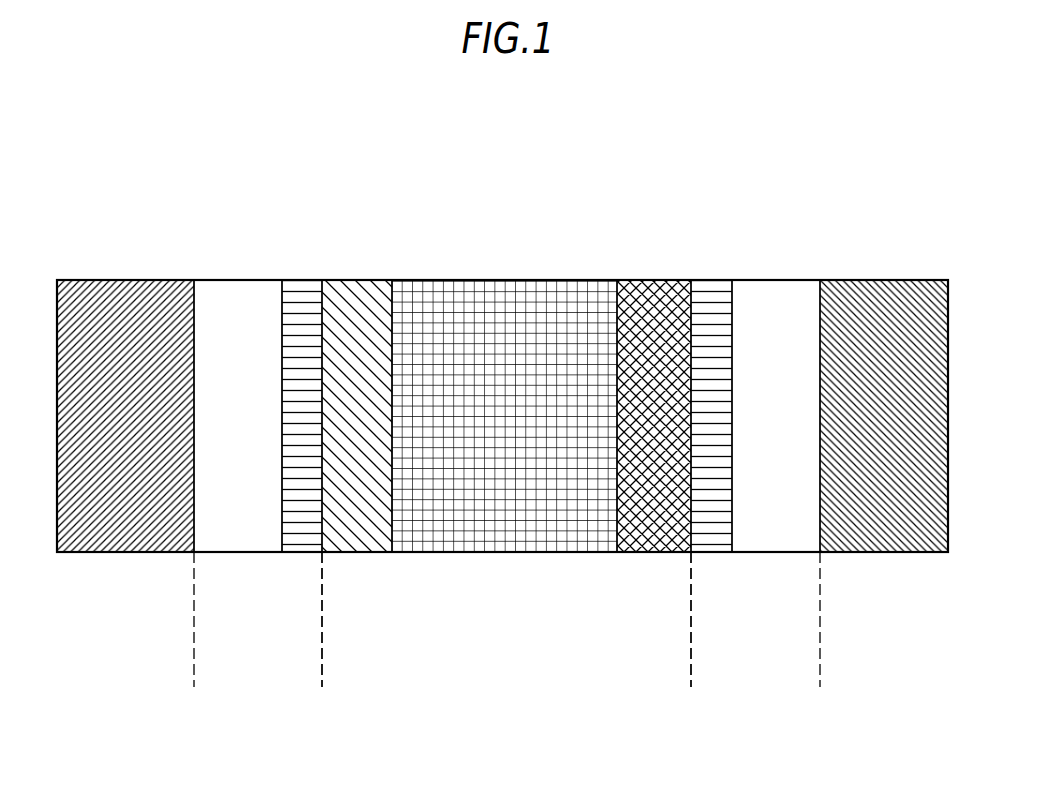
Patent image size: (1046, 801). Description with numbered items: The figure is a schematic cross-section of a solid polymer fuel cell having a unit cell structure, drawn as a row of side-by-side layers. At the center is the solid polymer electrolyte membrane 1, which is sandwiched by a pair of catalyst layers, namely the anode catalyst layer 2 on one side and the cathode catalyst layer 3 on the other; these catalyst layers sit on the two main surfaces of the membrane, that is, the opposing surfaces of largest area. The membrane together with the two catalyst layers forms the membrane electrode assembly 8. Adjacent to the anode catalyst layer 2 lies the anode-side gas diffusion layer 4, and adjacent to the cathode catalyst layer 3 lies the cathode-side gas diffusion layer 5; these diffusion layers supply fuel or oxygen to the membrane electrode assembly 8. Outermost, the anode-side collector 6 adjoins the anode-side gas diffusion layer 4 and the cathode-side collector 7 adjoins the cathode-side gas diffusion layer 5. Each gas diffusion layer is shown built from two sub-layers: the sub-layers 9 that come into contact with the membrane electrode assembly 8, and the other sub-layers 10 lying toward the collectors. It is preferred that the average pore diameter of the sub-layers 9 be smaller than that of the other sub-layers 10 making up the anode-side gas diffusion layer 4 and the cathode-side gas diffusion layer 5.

The solid polymer electrolyte membrane 1 is at (513, 278).
The anode catalyst layer 2 is at (363, 278).
The cathode catalyst layer 3 is at (655, 278).
The anode-side gas diffusion layer 4 is at (322, 687).
The cathode-side gas diffusion layer 5 is at (691, 687).
The anode-side collector 6 is at (108, 553).
The cathode-side collector 7 is at (900, 553).
The membrane electrode assembly 8 is at (322, 687).
The sub-layers in contact with the membrane electrode assembly 9 is at (303, 278).
The other sub-layers 10 is at (228, 553).